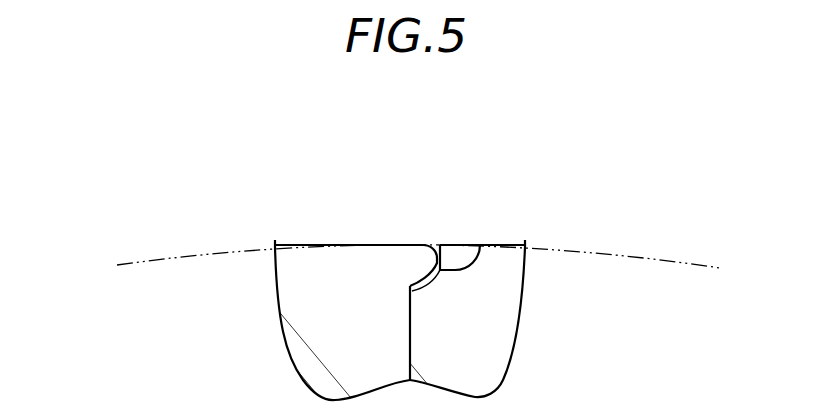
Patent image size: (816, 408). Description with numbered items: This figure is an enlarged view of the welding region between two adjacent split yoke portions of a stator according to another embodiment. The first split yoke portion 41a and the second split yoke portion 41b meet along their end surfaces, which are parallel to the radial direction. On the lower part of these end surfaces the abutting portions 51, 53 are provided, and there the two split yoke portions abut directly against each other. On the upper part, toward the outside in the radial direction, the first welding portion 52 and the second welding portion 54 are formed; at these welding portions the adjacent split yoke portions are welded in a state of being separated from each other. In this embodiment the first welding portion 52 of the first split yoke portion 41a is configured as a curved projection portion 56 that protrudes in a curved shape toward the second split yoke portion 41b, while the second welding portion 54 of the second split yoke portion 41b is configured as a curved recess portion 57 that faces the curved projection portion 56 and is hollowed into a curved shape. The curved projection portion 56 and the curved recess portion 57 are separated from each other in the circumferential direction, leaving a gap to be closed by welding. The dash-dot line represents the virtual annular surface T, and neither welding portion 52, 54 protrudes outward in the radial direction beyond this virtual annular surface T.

The virtual annular surface T is at (163, 257).
The first split yoke portion 41a is at (315, 250).
The second split yoke portion 41b is at (493, 248).
The abutting portion 51 is at (410, 343).
The abutting portion 53 is at (410, 318).
The curved projection portion 56 is at (383, 219).
The first welding portion 52 is at (408, 253).
The curved recess portion 57 is at (491, 211).
The second welding portion 54 is at (468, 258).